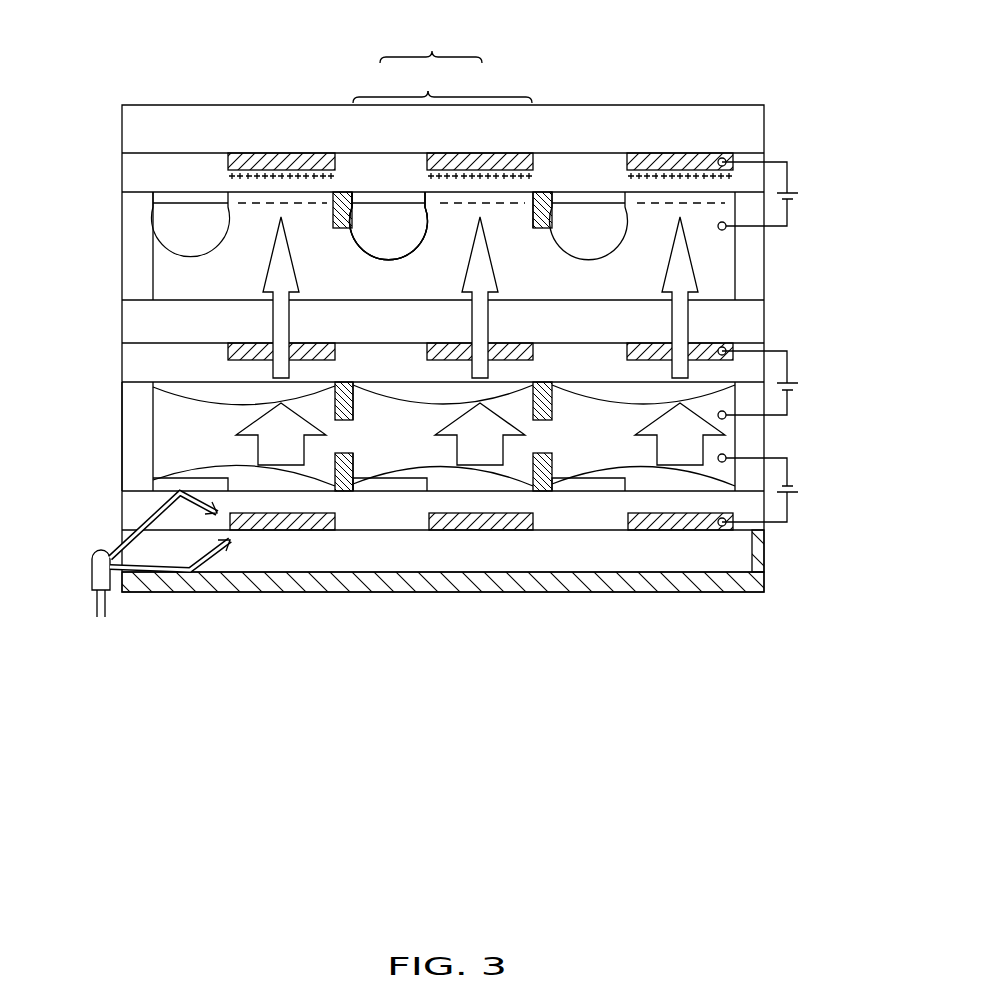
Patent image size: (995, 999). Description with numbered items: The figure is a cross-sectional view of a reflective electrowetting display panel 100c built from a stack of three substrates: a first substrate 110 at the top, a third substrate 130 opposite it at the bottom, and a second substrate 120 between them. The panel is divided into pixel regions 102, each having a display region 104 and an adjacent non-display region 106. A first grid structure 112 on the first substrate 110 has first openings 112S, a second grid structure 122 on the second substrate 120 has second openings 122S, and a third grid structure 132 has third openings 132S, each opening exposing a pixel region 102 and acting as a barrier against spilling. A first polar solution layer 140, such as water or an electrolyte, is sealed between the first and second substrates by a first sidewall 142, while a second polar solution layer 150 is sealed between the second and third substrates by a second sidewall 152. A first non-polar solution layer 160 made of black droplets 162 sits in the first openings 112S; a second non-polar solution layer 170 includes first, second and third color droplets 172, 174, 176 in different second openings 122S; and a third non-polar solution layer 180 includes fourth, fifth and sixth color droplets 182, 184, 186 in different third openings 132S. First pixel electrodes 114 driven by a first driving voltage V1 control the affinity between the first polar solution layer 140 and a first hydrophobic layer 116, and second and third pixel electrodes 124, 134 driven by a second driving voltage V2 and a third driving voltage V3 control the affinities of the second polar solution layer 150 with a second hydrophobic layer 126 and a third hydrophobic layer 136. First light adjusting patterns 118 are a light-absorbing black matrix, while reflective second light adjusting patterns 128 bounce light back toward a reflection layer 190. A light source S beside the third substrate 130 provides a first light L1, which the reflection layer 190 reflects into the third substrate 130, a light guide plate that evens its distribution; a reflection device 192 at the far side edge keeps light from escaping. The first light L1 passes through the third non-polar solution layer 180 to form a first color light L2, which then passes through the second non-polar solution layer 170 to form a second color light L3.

The display panel 100c is at (830, 900).
The first substrate 110 is at (130, 120).
The first pixel electrodes 114 is at (228, 159).
The first hydrophobic layer 116 is at (135, 181).
The first light adjusting patterns 118 is at (153, 201).
The first sidewall 142 is at (138, 236).
The first polar solution layer 140 is at (152, 274).
The second substrate 120 is at (130, 320).
The second pixel electrodes 124 is at (228, 352).
The second hydrophobic layer 126 is at (138, 372).
The second sidewall 152 is at (140, 402).
The second polar solution layer 150 is at (163, 438).
The second light adjusting patterns 128 is at (155, 487).
The third pixel electrodes 134 is at (228, 520).
The third hydrophobic layer 136 is at (130, 522).
The black droplets 162 is at (375, 217).
The first non-polar solution layer 160 is at (389, 226).
The pixel regions 102 is at (431, 43).
The non-display region 106 is at (390, 82).
The display region 104 is at (480, 82).
The first grid structure 112 is at (543, 192).
The first openings 112S is at (450, 238).
The second grid structure 122 is at (553, 422).
The second openings 122S is at (400, 422).
The third grid structure 132 is at (543, 491).
The third openings 132S is at (396, 459).
The second non-polar solution layer 170 is at (496, 555).
The first color droplet 172 is at (228, 407).
The second color droplet 174 is at (417, 400).
The third color droplet 176 is at (683, 390).
The third non-polar solution layer 180 is at (480, 630).
The fourth color droplet 182 is at (238, 468).
The fifth color droplet 184 is at (443, 470).
The sixth color droplet 186 is at (647, 470).
The third substrate 130 is at (265, 557).
The reflection device 192 is at (760, 553).
The reflection layer 190 is at (760, 580).
The light source S is at (95, 575).
The first light L1 is at (217, 543).
The first color light L2 is at (700, 426).
The second color light L3 is at (682, 322).
The first driving voltage V1 is at (806, 180).
The second driving voltage V2 is at (806, 372).
The third driving voltage V3 is at (806, 478).